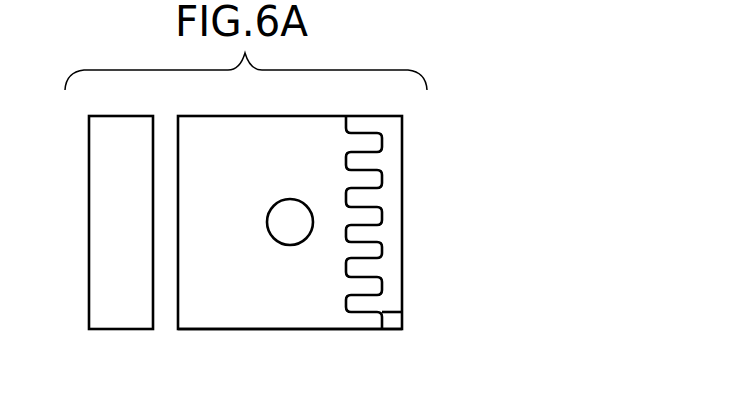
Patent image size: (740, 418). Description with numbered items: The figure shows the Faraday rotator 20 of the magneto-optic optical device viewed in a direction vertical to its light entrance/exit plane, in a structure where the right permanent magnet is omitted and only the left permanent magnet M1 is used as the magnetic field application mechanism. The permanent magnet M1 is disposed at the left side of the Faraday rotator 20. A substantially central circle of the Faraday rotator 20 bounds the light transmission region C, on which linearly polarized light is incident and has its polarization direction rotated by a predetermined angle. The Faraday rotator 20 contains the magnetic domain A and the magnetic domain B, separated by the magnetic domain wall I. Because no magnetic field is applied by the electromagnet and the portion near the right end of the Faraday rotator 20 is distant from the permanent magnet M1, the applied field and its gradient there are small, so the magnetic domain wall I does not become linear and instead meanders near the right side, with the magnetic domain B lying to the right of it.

The left permanent magnet M1 is at (122, 329).
The Faraday rotator 20 is at (315, 329).
The magnetic domain A is at (230, 318).
The light transmission region C is at (290, 199).
The magnetic domain wall I is at (382, 140).
The magnetic domain B is at (387, 297).